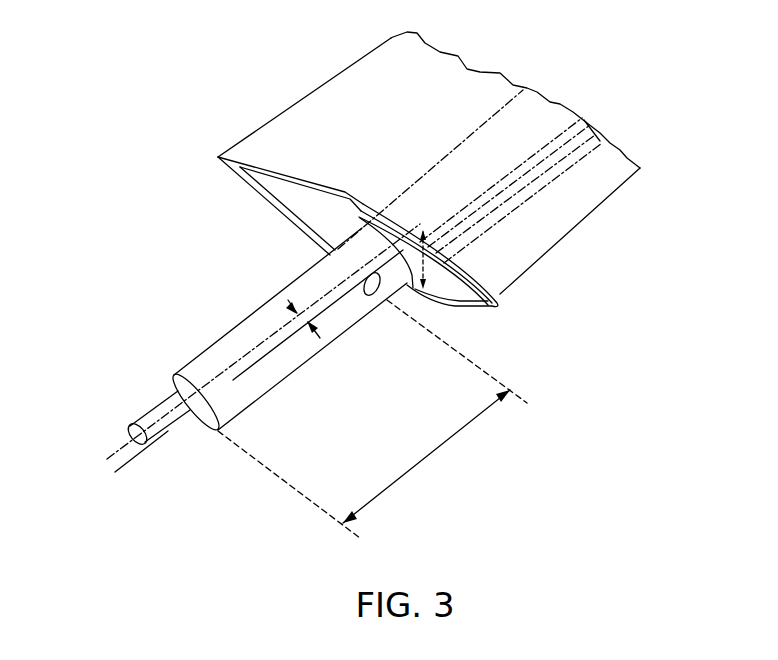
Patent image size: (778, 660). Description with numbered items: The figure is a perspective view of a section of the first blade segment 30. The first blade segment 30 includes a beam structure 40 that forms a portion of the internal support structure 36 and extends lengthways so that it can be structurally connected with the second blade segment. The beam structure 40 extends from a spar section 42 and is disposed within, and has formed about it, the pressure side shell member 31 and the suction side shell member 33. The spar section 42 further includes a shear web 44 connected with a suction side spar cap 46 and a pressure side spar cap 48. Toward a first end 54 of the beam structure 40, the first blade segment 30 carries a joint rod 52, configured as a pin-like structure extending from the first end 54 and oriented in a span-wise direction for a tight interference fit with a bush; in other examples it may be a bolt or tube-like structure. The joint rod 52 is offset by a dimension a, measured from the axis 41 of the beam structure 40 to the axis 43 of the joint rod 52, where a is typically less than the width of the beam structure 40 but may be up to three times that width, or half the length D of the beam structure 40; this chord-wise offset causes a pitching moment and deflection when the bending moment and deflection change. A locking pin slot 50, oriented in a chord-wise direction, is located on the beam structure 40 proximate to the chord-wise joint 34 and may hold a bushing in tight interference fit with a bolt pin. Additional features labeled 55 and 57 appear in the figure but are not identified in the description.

The first blade segment 30 is at (233, 78).
The pressure side shell member 31 is at (374, 52).
The suction side shell member 33 is at (276, 207).
The chord-wise joint 34 is at (233, 186).
The internal support structure 36 is at (277, 271).
The beam structure 40 is at (320, 352).
The axis of the beam structure 41 is at (263, 364).
The spar section 42 is at (530, 100).
The axis of the joint rod 43 is at (112, 442).
The shear web 44 is at (600, 132).
The suction side spar cap 46 is at (567, 234).
The pressure side spar cap 48 is at (418, 181).
The locking pin slot 50 is at (377, 297).
The joint rod 52 is at (172, 433).
The first end of the beam structure 54 is at (225, 432).
The trailing edge tip 55 is at (502, 299).
The upper skin 57 is at (302, 177).